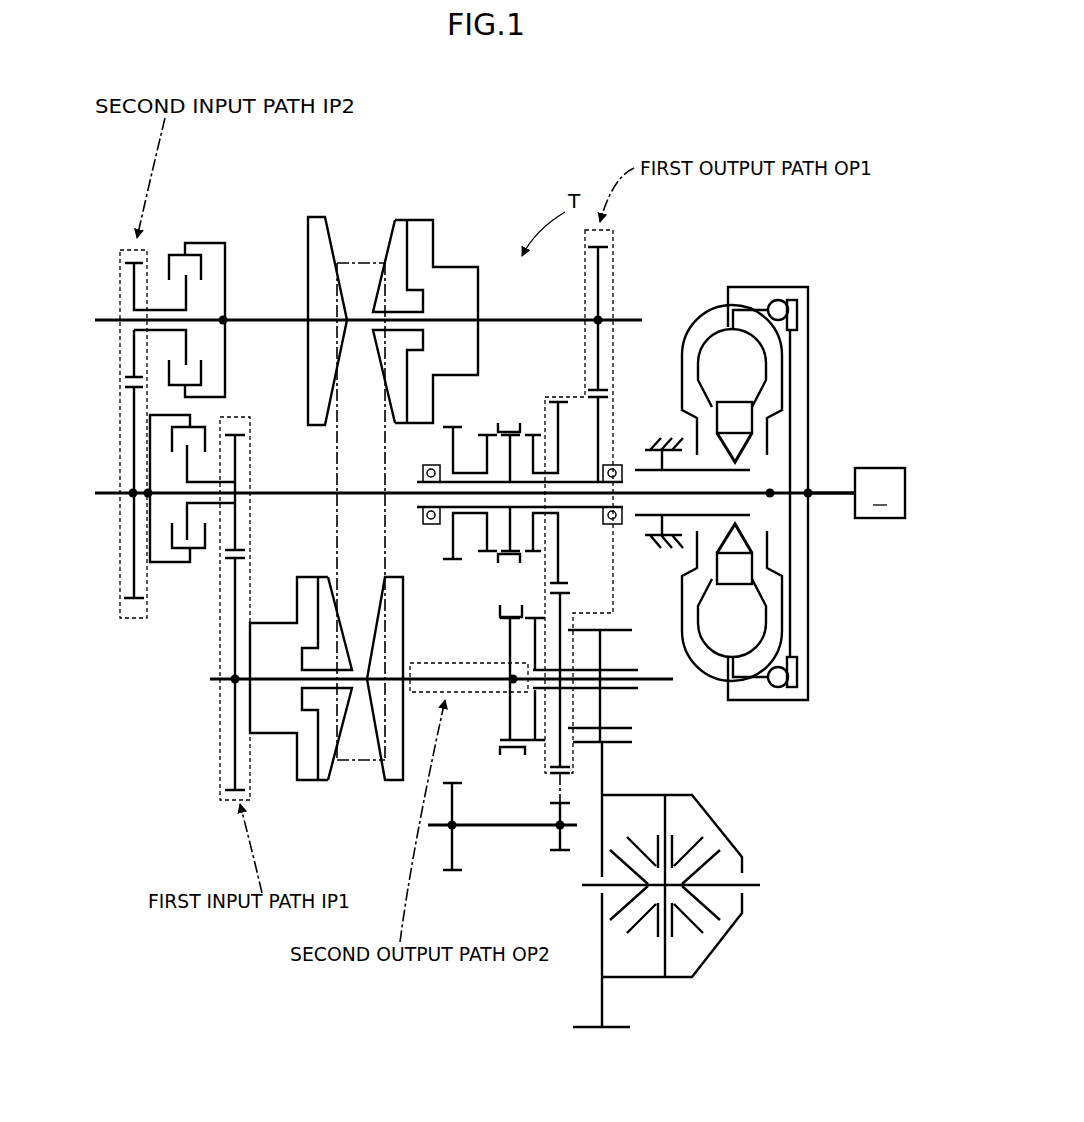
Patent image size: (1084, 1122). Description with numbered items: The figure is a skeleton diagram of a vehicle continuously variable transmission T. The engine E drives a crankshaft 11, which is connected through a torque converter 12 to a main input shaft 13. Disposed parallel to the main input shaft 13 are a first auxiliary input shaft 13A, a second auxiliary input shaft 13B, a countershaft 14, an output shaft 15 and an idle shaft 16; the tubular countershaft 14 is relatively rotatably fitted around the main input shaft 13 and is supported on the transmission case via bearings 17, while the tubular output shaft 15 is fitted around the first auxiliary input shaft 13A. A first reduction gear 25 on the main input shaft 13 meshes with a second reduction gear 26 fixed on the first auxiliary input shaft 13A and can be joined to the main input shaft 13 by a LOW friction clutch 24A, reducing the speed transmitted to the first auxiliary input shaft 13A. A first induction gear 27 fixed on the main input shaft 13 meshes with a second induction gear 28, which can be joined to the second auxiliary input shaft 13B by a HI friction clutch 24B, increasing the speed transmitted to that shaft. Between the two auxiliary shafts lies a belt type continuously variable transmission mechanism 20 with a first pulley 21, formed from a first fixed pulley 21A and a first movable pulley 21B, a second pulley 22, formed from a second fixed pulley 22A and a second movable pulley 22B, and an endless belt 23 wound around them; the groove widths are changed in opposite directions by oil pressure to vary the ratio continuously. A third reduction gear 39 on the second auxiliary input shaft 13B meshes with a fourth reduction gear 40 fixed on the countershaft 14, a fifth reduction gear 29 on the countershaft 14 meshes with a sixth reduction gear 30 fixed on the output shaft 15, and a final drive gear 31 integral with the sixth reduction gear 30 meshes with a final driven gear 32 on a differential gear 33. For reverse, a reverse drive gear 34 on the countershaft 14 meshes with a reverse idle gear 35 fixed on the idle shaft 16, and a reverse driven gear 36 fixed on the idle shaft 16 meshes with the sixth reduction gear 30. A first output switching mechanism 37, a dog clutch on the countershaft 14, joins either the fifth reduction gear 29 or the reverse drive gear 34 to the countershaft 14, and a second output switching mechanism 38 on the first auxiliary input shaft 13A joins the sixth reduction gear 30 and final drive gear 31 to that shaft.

The crankshaft 11 is at (842, 488).
The torque converter 12 is at (776, 280).
The main input shaft 13 is at (628, 490).
The first auxiliary input shaft 13A is at (657, 688).
The second auxiliary input shaft 13B is at (616, 320).
The countershaft 14 is at (582, 480).
The output shaft 15 is at (612, 668).
The idle shaft 16 is at (507, 830).
The bearings 17 is at (430, 520).
The belt type continuously variable transmission mechanism 20 is at (437, 208).
The first pulley 21 is at (410, 830).
The first fixed pulley 21A is at (395, 770).
The first movable pulley 21B is at (325, 779).
The second pulley 22 is at (408, 170).
The second fixed pulley 22A is at (323, 242).
The second movable pulley 22B is at (394, 242).
The endless belt 23 is at (335, 524).
The LOW friction clutch 24A is at (181, 540).
The HI friction clutch 24B is at (195, 252).
The first reduction gear 25 is at (225, 556).
The second reduction gear 26 is at (228, 800).
The first induction gear 27 is at (124, 384).
The second induction gear 28 is at (136, 262).
The fifth reduction gear 29 is at (557, 396).
The sixth reduction gear 30 is at (553, 775).
The final drive gear 31 is at (612, 628).
The final driven gear 32 is at (626, 742).
The differential gear 33 is at (730, 808).
The reverse drive gear 34 is at (449, 426).
The reverse idle gear 35 is at (456, 782).
The reverse driven gear 36 is at (562, 802).
The first output switching mechanism 37 is at (510, 421).
The second output switching mechanism 38 is at (508, 605).
The third reduction gear 39 is at (601, 246).
The fourth reduction gear 40 is at (606, 393).